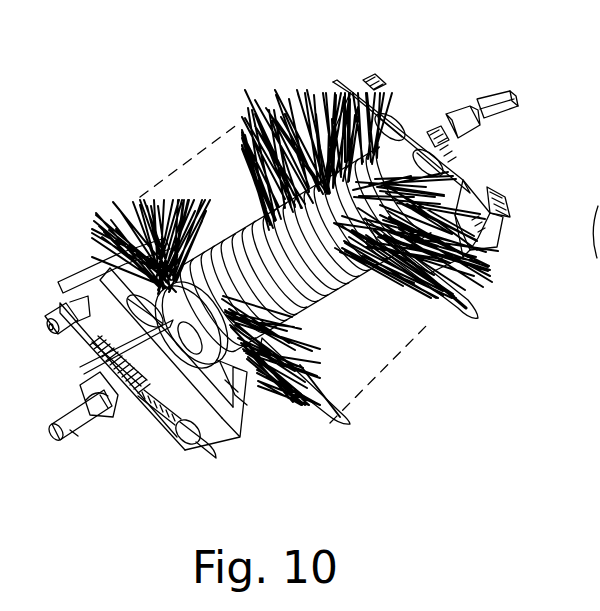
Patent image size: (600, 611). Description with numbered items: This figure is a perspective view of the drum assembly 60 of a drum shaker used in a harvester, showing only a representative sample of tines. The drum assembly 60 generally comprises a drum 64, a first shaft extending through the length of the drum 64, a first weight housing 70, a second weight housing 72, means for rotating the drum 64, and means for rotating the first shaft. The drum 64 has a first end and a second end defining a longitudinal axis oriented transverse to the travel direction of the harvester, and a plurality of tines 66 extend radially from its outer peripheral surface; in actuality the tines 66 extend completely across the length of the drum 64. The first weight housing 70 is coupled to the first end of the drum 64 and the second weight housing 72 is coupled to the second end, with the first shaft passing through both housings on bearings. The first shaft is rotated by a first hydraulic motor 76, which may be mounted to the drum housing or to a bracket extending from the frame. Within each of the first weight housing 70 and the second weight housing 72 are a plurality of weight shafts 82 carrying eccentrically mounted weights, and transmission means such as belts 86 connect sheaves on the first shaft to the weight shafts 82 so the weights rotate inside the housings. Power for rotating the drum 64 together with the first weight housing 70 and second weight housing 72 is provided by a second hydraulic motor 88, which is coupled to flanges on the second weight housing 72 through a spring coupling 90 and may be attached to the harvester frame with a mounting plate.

The drum assembly 60 is at (204, 90).
The drum 64 is at (320, 297).
The tines 66 is at (478, 318).
The first weight housing 70 is at (500, 268).
The second weight housing 72 is at (258, 445).
The first hydraulic motor 76 is at (500, 127).
The weight shafts 82 is at (184, 447).
The belts 86 is at (405, 103).
The second hydraulic motor 88 is at (83, 437).
The spring coupling 90 is at (116, 452).